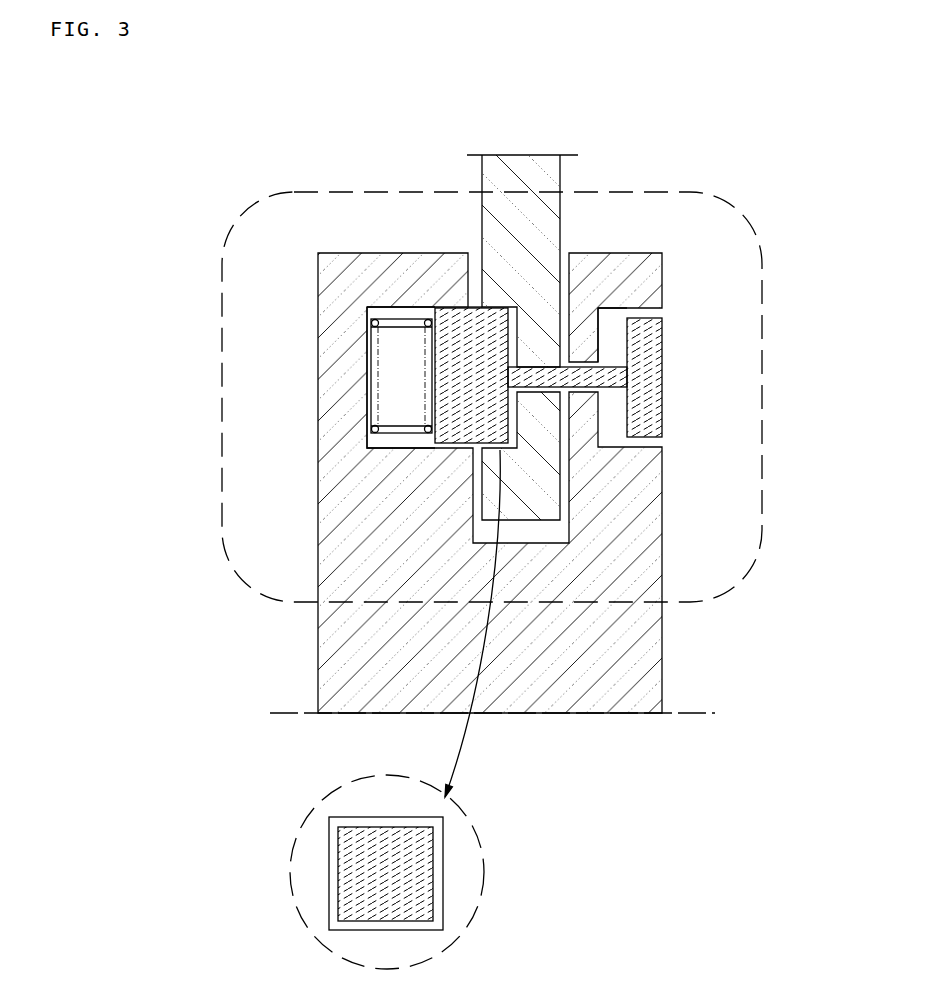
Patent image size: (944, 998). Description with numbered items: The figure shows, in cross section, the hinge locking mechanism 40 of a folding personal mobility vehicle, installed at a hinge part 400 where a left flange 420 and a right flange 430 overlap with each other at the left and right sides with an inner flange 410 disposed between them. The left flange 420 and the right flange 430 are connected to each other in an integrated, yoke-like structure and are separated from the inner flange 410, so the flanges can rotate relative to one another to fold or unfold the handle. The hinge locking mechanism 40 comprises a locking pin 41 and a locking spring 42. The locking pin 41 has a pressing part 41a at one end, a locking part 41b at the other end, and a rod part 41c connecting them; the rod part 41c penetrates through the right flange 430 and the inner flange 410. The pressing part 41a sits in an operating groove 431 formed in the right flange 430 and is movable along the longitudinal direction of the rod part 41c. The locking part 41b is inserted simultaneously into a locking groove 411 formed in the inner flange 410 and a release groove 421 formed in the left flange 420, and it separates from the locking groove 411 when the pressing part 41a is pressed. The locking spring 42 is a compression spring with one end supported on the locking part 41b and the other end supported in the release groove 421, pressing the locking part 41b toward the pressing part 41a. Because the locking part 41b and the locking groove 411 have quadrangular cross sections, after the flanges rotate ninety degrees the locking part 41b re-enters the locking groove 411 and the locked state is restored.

The hinge locking mechanism 40 is at (507, 614).
The locking pin 41 is at (507, 614).
The pressing part 41a is at (653, 400).
The locking part 41b is at (470, 409).
The rod part 41c is at (545, 375).
The locking spring 42 is at (390, 322).
The hinge part 400 is at (712, 205).
The inner flange 410 is at (387, 513).
The locking groove 411 is at (515, 352).
The left flange 420 is at (330, 302).
The release groove 421 is at (373, 377).
The right flange 430 is at (618, 265).
The operating groove 431 is at (610, 310).